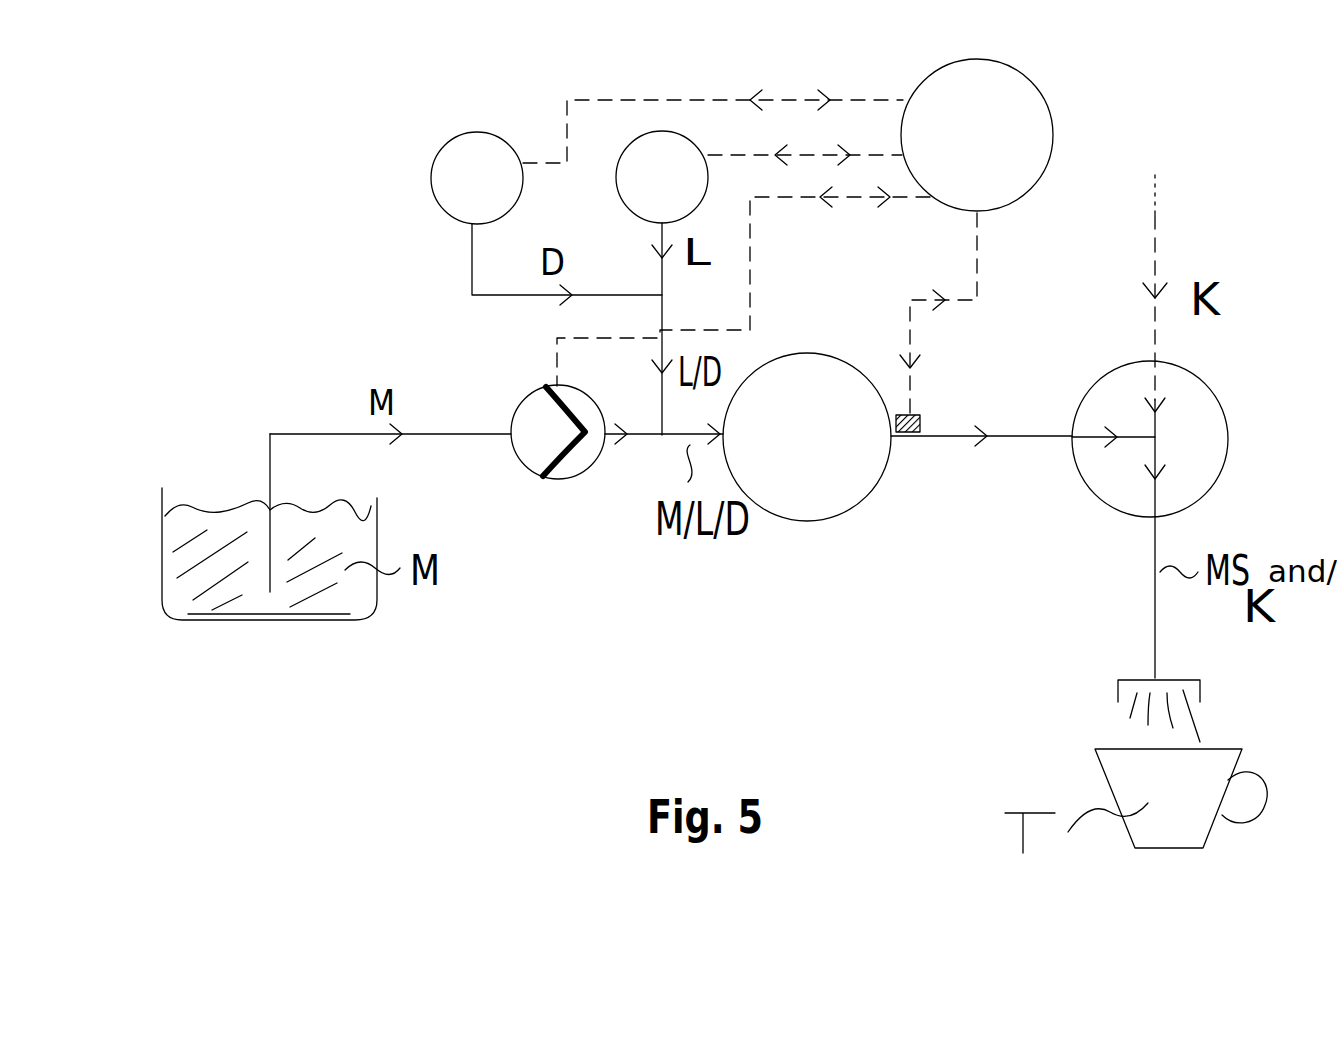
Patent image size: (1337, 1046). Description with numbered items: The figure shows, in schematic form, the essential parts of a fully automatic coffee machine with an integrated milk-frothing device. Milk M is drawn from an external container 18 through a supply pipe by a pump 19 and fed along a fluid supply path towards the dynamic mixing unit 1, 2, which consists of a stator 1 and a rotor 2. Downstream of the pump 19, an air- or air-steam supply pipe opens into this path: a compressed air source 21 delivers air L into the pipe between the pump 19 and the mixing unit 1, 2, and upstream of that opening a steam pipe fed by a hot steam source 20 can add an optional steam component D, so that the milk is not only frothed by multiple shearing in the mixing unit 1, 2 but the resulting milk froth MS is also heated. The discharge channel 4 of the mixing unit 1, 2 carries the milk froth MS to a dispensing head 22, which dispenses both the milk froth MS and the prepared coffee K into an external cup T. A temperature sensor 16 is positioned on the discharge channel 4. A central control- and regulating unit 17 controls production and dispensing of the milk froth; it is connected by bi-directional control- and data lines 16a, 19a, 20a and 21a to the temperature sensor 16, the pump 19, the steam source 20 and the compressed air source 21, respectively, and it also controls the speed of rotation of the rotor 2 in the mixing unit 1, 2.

The stator 1 is at (807, 500).
The rotor 2 is at (817, 482).
The discharge channel 4 is at (963, 443).
The temperature sensor 16 is at (923, 420).
The control- and data line 16a is at (966, 314).
The central control- and regulating unit 17 is at (977, 135).
The external container 18 is at (377, 610).
The pump 19 is at (542, 447).
The control- and data line 19a is at (743, 277).
The hot steam source 20 is at (477, 178).
The control- and data line 20a is at (713, 109).
The compressed air source 21 is at (662, 177).
The control- and data line 21a is at (805, 144).
The dispensing head 22 is at (1193, 415).